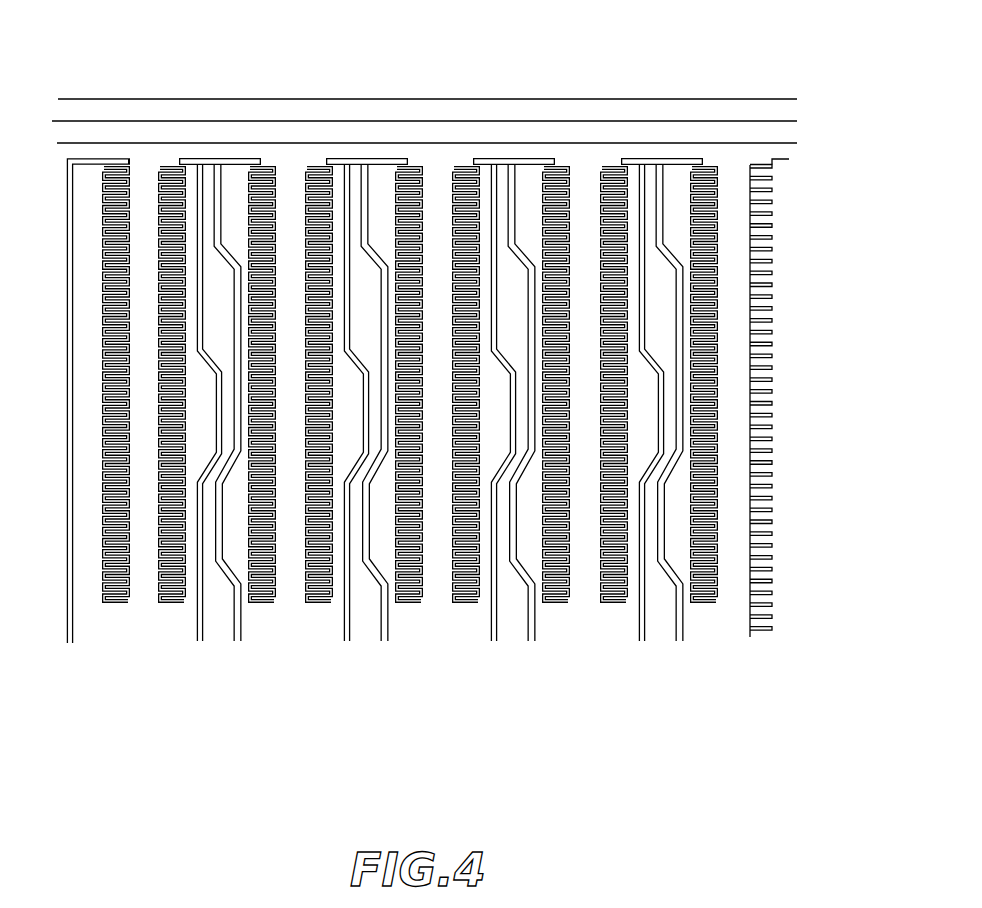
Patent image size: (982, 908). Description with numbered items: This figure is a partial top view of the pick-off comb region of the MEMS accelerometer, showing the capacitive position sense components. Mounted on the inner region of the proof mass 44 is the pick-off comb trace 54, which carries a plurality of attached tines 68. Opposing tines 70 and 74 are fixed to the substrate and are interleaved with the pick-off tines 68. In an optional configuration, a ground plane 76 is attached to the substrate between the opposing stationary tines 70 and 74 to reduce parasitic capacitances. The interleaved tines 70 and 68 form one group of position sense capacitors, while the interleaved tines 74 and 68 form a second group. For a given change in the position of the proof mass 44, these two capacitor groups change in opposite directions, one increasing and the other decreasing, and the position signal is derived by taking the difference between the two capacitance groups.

The proof mass 44 is at (674, 85).
The pick-off comb trace 54 is at (437, 200).
The tines 68 is at (773, 562).
The opposing tine 70 is at (340, 641).
The opposing tine 74 is at (393, 638).
The ground plane 76 is at (365, 628).